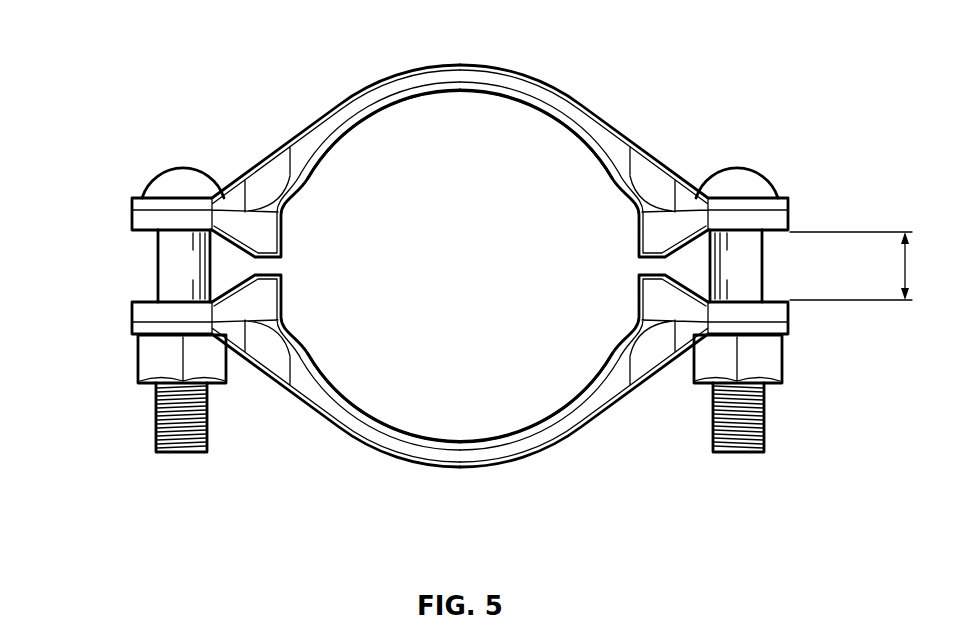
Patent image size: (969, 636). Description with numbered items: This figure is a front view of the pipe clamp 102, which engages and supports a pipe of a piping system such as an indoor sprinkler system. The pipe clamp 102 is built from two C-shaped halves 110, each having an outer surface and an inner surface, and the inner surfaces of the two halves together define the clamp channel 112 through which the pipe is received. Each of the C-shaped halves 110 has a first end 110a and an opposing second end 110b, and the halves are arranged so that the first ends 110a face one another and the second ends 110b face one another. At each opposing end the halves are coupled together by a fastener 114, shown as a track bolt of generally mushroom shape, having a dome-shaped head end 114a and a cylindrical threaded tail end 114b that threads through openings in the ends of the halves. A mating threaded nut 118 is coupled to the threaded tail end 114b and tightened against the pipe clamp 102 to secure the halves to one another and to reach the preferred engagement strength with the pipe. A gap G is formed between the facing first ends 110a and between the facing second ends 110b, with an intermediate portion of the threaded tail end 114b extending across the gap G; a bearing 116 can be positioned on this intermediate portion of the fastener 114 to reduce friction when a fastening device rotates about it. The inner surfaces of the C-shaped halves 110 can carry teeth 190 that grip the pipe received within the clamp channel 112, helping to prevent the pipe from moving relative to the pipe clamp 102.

The pipe clamp 102 is at (455, 287).
The C-shaped halves 110 is at (460, 281).
The first end 110a is at (267, 162).
The second end 110b is at (653, 162).
The clamp channel 112 is at (418, 172).
The fastener 114 is at (454, 330).
The dome-shaped head end 114a is at (163, 184).
The threaded tail end 114b is at (179, 455).
The bearing 116 is at (167, 278).
The threaded nut 118 is at (150, 362).
The teeth 190 is at (313, 352).
The gap G is at (863, 266).